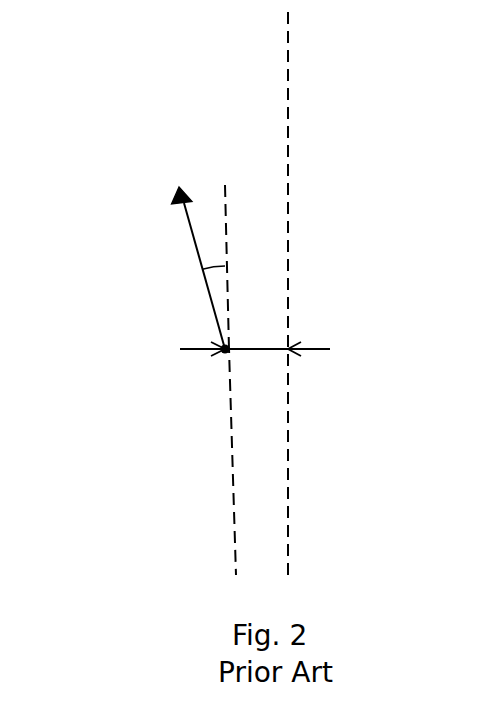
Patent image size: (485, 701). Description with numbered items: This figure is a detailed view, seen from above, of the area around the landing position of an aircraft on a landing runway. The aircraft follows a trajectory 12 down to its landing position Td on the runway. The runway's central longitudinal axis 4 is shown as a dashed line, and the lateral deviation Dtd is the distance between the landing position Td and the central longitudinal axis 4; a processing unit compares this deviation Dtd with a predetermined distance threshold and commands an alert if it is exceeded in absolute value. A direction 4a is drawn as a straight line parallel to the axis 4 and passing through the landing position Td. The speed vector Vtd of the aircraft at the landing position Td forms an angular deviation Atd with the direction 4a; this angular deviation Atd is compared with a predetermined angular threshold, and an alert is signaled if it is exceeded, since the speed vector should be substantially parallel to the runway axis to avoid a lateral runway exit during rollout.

The central longitudinal axis 4 is at (288, 48).
The direction 4a is at (226, 212).
The trajectory 12 is at (231, 453).
The landing position Td is at (221, 355).
The deviation Dtd is at (260, 338).
The speed vector Vtd is at (210, 296).
The angular deviation Atd is at (203, 265).